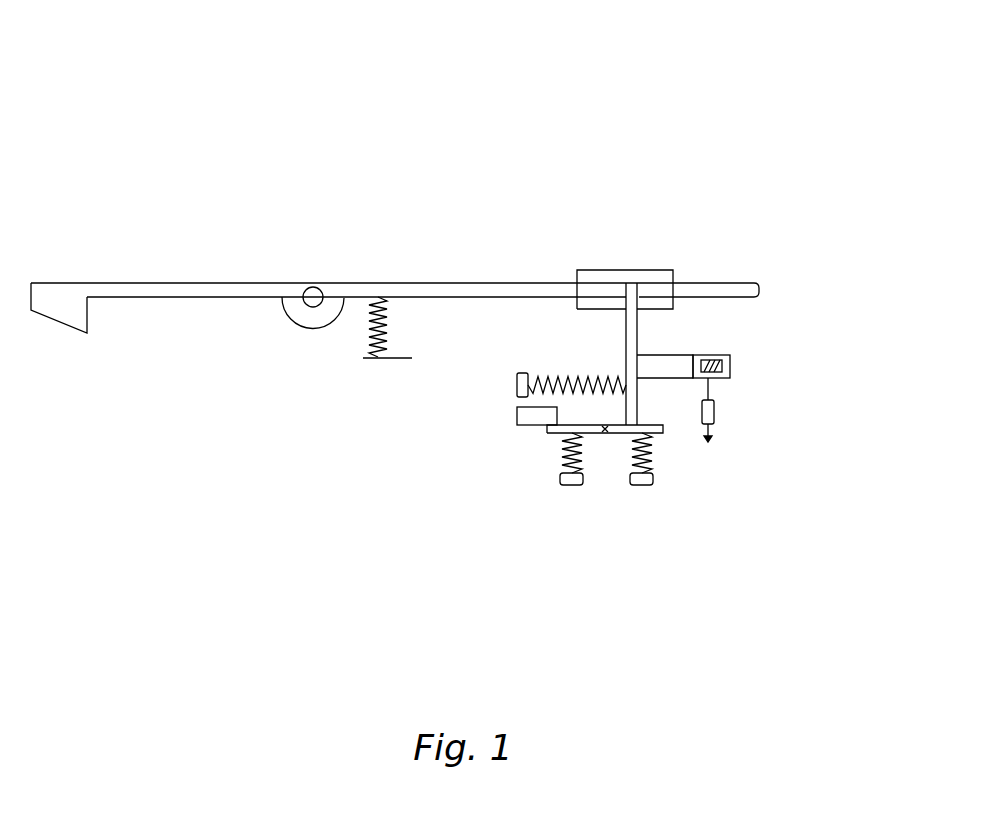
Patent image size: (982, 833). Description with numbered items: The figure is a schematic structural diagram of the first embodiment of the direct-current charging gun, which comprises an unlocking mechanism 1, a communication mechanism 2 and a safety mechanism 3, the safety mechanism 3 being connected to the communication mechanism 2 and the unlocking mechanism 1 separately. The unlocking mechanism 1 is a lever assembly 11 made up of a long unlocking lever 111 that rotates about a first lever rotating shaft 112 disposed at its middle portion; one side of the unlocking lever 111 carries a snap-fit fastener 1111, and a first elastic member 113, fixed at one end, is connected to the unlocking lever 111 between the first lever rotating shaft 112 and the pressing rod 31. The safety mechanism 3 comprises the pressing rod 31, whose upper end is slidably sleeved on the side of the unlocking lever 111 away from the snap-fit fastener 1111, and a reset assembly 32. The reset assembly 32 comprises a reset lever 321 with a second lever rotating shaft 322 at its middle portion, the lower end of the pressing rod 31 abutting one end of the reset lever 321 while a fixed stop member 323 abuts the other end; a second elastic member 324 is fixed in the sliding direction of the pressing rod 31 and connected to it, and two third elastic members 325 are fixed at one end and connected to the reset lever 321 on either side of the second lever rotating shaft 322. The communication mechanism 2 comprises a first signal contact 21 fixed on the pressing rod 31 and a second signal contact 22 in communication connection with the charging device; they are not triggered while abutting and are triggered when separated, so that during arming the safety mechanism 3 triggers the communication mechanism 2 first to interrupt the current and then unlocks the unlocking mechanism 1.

The unlocking mechanism 1 is at (383, 68).
The lever assembly 11 is at (452, 137).
The unlocking lever 111 is at (447, 283).
The snap-fit fastener 1111 is at (65, 308).
The first lever rotating shaft 112 is at (312, 287).
The first elastic member 113 is at (378, 297).
The communication mechanism 2 is at (848, 360).
The first signal contact 21 is at (665, 364).
The second signal contact 22 is at (733, 380).
The safety mechanism 3 is at (527, 648).
The pressing rod 31 is at (633, 320).
The reset assembly 32 is at (675, 587).
The reset lever 321 is at (560, 432).
The second lever rotating shaft 322 is at (605, 430).
The stop member 323 is at (535, 415).
The second elastic member 324 is at (530, 393).
The third elastic member 325 is at (580, 485).